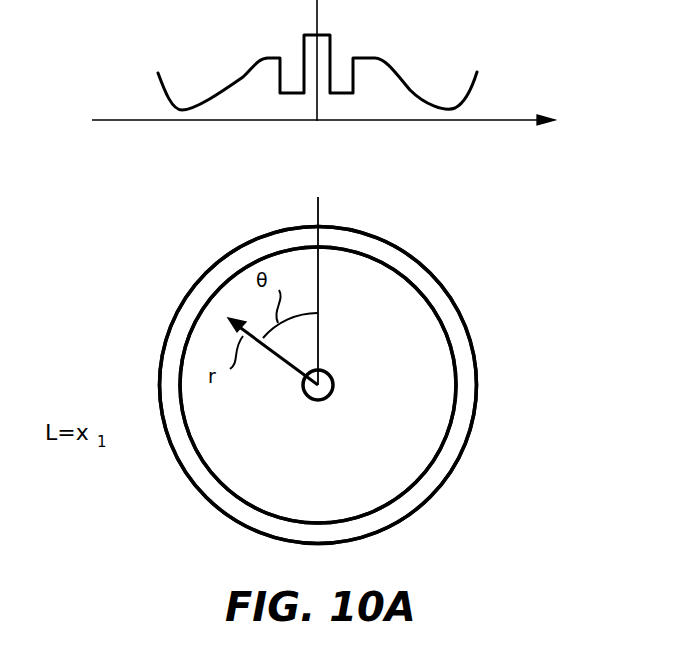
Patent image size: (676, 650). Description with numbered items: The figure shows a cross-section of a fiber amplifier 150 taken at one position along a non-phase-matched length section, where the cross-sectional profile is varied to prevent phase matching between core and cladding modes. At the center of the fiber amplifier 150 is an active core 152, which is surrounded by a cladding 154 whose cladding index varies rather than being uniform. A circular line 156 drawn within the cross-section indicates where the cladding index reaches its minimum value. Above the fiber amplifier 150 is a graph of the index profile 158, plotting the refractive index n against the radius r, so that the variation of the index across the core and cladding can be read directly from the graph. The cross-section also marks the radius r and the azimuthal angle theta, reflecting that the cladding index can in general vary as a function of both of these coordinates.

The fiber amplifier 150 is at (100, 311).
The active core 152 is at (334, 374).
The cladding 154 is at (238, 450).
The line indicating minimum cladding index 156 is at (457, 362).
The index profile 158 is at (166, 92).